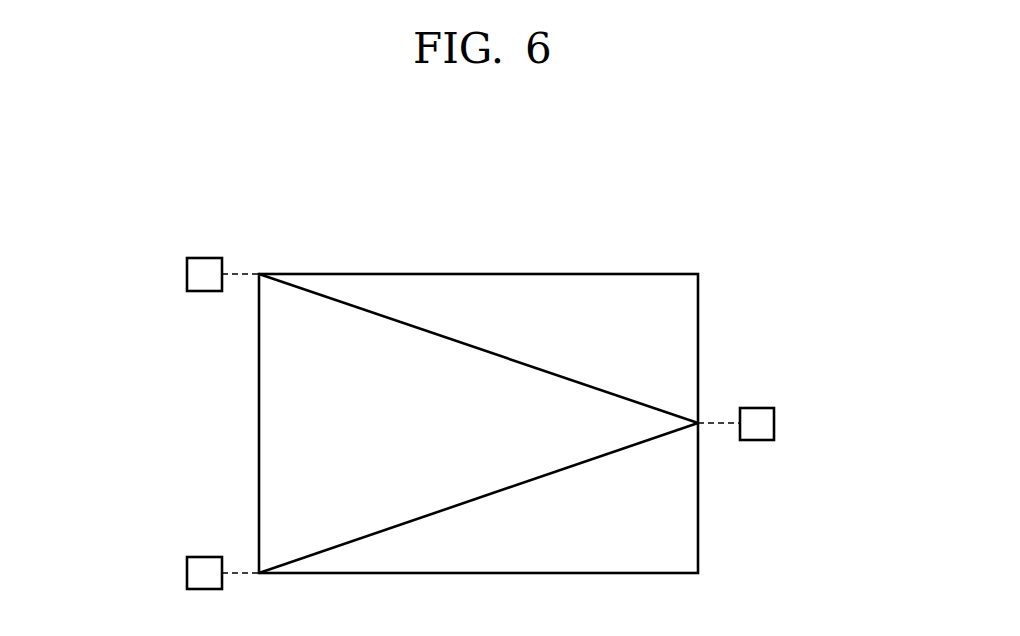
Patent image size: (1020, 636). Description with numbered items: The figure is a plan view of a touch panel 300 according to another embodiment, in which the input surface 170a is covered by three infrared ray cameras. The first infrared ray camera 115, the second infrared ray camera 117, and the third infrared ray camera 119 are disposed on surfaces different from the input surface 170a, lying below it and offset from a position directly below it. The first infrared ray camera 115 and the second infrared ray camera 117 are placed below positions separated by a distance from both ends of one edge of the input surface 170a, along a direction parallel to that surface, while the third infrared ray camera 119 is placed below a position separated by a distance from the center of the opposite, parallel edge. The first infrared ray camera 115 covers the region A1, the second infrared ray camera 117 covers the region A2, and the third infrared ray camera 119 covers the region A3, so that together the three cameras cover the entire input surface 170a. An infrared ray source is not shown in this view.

The touch panel 300 is at (486, 364).
The input surface 170a is at (602, 287).
The first infrared ray camera 115 is at (187, 277).
The second infrared ray camera 117 is at (187, 573).
The third infrared ray camera 119 is at (774, 424).
The region covered by first infrared ray camera A1 is at (568, 326).
The region covered by second infrared ray camera A2 is at (570, 532).
The region covered by third infrared ray camera A3 is at (448, 436).